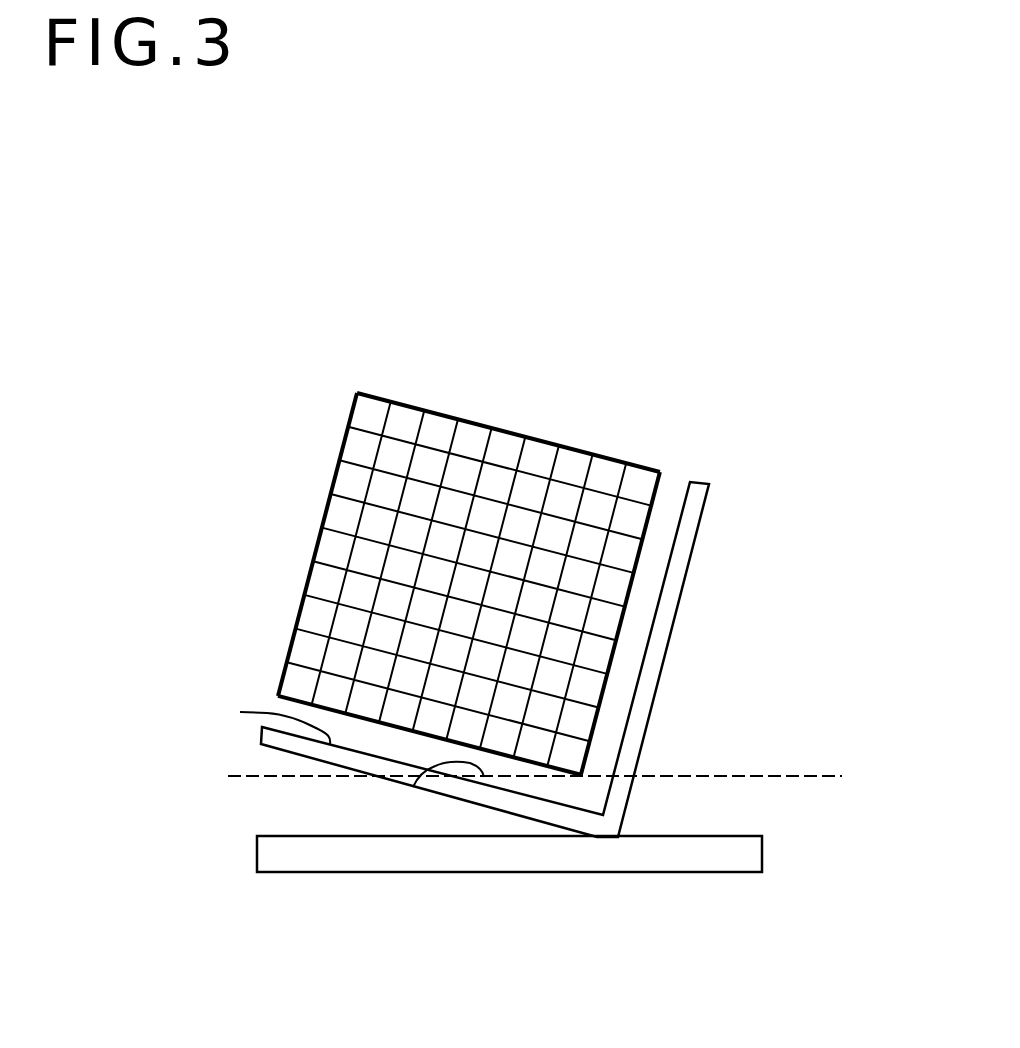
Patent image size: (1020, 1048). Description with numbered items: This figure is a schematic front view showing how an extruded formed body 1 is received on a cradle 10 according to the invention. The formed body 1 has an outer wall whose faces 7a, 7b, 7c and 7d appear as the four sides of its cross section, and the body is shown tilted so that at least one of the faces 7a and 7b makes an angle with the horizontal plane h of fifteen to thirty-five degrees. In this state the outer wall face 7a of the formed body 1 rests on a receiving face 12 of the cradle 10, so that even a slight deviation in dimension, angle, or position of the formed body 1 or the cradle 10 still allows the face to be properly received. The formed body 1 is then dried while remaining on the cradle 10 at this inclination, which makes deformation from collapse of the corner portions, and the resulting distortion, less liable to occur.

The formed body 1 is at (546, 323).
The outer wall face 7a is at (297, 702).
The outer wall face 7b is at (636, 573).
The outer wall face 7c is at (578, 450).
The outer wall face 7d is at (325, 510).
The cradle 10 is at (693, 665).
The receiving face 12 is at (240, 712).
The horizontal plane h is at (550, 776).